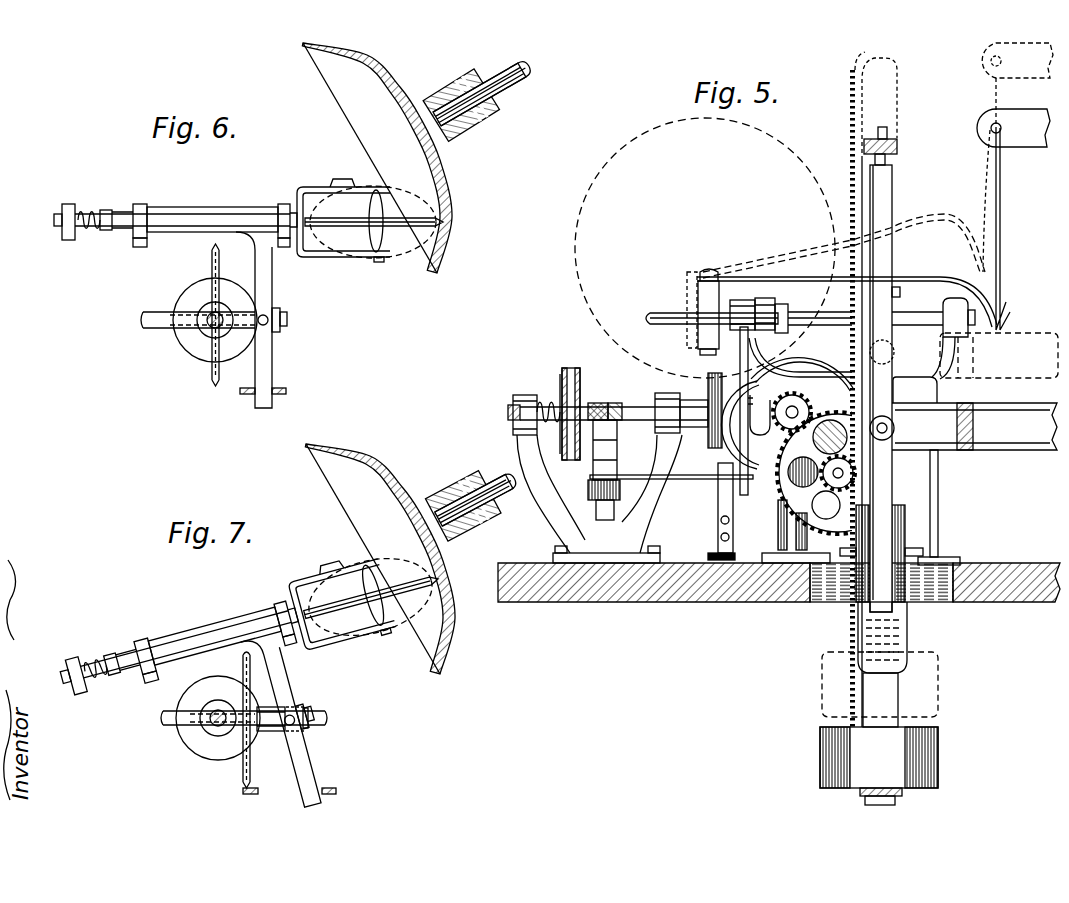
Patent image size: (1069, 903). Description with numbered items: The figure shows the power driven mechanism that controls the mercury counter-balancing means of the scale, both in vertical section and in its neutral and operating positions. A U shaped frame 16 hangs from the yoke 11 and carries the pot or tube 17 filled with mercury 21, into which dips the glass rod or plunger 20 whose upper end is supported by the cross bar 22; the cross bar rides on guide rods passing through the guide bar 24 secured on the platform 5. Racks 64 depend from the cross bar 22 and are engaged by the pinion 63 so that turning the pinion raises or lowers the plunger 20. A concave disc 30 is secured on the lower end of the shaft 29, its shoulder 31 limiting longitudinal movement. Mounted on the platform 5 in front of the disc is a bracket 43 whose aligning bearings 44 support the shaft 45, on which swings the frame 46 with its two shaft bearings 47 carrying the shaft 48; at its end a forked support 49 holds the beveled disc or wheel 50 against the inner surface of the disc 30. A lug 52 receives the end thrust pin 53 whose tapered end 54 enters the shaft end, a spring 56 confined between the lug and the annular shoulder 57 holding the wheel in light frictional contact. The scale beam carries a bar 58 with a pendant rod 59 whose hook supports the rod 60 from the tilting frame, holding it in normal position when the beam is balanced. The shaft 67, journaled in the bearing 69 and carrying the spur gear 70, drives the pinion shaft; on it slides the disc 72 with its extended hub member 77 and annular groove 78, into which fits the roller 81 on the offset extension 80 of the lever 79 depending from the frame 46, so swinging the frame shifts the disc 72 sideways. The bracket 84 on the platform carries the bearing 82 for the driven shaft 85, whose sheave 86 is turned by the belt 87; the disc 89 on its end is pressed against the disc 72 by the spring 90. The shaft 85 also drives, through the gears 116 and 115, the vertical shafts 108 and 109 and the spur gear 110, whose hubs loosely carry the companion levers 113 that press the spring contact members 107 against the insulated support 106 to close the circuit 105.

In FIG. 5, the platform 5 is at (663, 602).
In FIG. 5, the yoke 11 is at (948, 452).
In FIG. 5, the U shaped frame 16 is at (905, 797).
In FIG. 5, the pot or tube 17 is at (900, 640).
In FIG. 5, the glass rod or plunger 20 is at (892, 182).
In FIG. 5, the mercury 21 is at (885, 652).
In FIG. 5, the cross bar 22 is at (898, 146).
In FIG. 5, the guide bar 24 is at (900, 292).
In FIG. 6, the shaft 29 is at (505, 86).
In FIG. 7, the shaft 29 is at (503, 496).
In FIG. 6, the concave disc 30 is at (377, 158).
In FIG. 7, the concave disc 30 is at (380, 555).
In FIG. 5, the concave disc 30 is at (616, 155).
In FIG. 6, the shoulder 31 is at (455, 84).
In FIG. 7, the shoulder 31 is at (455, 480).
In FIG. 5, the bracket 43 is at (940, 388).
In FIG. 5, the aligning bearings 44 is at (968, 322).
In FIG. 6, the shaft 45 is at (270, 207).
In FIG. 7, the shaft 45 is at (261, 603).
In FIG. 5, the shaft 45 is at (816, 312).
In FIG. 6, the frame 46 is at (198, 207).
In FIG. 7, the frame 46 is at (196, 620).
In FIG. 6, the shaft bearings 47 is at (284, 247).
In FIG. 7, the shaft bearings 47 is at (296, 634).
In FIG. 6, the shaft 48 is at (230, 214).
In FIG. 7, the shaft 48 is at (224, 608).
In FIG. 6, the forked support 49 is at (305, 187).
In FIG. 7, the forked support 49 is at (297, 584).
In FIG. 5, the forked support 49 is at (700, 345).
In FIG. 6, the disc or wheel 50 is at (398, 218).
In FIG. 7, the disc or wheel 50 is at (382, 577).
In FIG. 5, the disc or wheel 50 is at (668, 313).
In FIG. 6, the lug 52 is at (70, 204).
In FIG. 7, the lug 52 is at (80, 656).
In FIG. 6, the end thrust pin 53 is at (57, 226).
In FIG. 7, the end thrust pin 53 is at (63, 673).
In FIG. 6, the tapered end 54 is at (137, 204).
In FIG. 7, the tapered end 54 is at (139, 647).
In FIG. 6, the spring 56 is at (84, 210).
In FIG. 7, the spring 56 is at (96, 645).
In FIG. 6, the annular shoulder 57 is at (104, 230).
In FIG. 7, the annular shoulder 57 is at (112, 670).
In FIG. 5, the bar 58 is at (1032, 147).
In FIG. 5, the pendant rod 59 is at (1002, 218).
In FIG. 5, the rod 60 is at (943, 277).
In FIG. 5, the pinion 63 is at (833, 487).
In FIG. 5, the rack 64 is at (850, 165).
In FIG. 6, the shaft 67 is at (146, 313).
In FIG. 7, the shaft 67 is at (158, 722).
In FIG. 5, the shaft 67 is at (794, 404).
In FIG. 5, the bearing 69 is at (812, 394).
In FIG. 5, the spur gear 70 is at (800, 402).
In FIG. 6, the disc 72 is at (210, 262).
In FIG. 7, the disc 72 is at (242, 668).
In FIG. 5, the disc 72 is at (708, 385).
In FIG. 7, the extended hub member 77 is at (270, 735).
In FIG. 7, the annular groove 78 is at (290, 748).
In FIG. 6, the lever 79 is at (272, 282).
In FIG. 7, the lever 79 is at (297, 678).
In FIG. 5, the lever 79 is at (740, 452).
In FIG. 5, the offset extension 80 is at (756, 437).
In FIG. 6, the roller 81 is at (275, 332).
In FIG. 7, the roller 81 is at (303, 708).
In FIG. 5, the roller 81 is at (766, 420).
In FIG. 5, the bearing 82 is at (663, 393).
In FIG. 5, the bracket 84 is at (562, 522).
In FIG. 6, the shaft 85 is at (208, 326).
In FIG. 7, the shaft 85 is at (210, 727).
In FIG. 5, the shaft 85 is at (508, 412).
In FIG. 5, the sheave 86 is at (563, 380).
In FIG. 5, the belt 87 is at (571, 368).
In FIG. 6, the disc 89 is at (196, 352).
In FIG. 7, the disc 89 is at (206, 755).
In FIG. 5, the disc 89 is at (722, 442).
In FIG. 5, the spring 90 is at (548, 400).
In FIG. 5, the circuit 105 is at (708, 556).
In FIG. 5, the insulated support 106 is at (718, 528).
In FIG. 5, the spring contact members 107 is at (718, 506).
In FIG. 5, the vertical shaft 108 is at (617, 463).
In FIG. 5, the vertical shaft 109 is at (617, 452).
In FIG. 5, the spur gear 110 is at (593, 489).
In FIG. 6, the companion levers 113 is at (245, 394).
In FIG. 7, the companion levers 113 is at (330, 788).
In FIG. 5, the companion levers 113 is at (700, 479).
In FIG. 5, the gear 115 is at (600, 403).
In FIG. 5, the gear 116 is at (612, 403).